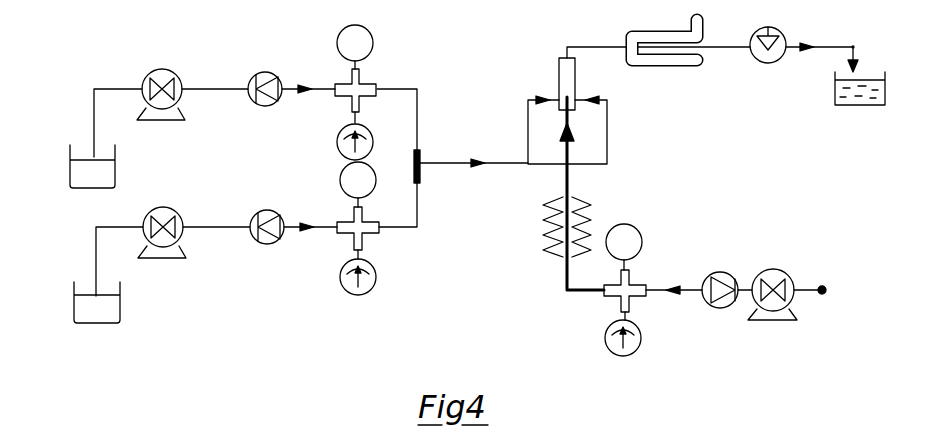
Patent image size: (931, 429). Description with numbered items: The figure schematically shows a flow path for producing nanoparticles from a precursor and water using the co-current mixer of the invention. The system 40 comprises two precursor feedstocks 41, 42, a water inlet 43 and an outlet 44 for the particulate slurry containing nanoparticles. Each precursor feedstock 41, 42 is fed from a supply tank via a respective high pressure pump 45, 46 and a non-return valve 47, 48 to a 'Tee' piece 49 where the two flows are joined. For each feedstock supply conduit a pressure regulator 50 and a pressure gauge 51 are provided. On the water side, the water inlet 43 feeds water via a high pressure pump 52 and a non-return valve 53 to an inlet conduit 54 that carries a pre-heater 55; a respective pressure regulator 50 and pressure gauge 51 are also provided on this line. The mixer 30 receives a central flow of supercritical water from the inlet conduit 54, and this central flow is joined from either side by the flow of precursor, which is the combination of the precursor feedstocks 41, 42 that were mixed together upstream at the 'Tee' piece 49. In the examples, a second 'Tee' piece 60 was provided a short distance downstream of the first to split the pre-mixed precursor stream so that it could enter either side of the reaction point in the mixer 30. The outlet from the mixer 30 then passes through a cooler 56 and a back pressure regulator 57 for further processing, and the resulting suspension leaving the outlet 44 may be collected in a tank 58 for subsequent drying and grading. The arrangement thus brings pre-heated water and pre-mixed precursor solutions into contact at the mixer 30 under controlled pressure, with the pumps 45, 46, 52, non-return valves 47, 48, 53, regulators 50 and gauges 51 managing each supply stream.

The mixer 30 is at (552, 63).
The system 40 is at (490, 58).
The precursor feedstock 41 is at (76, 176).
The precursor feedstock 42 is at (97, 316).
The water inlet 43 is at (840, 265).
The outlet 44 is at (846, 47).
The high pressure pump 45 is at (164, 69).
The high pressure pump 46 is at (179, 207).
The non-return valve 47 is at (277, 50).
The non-return valve 48 is at (273, 211).
The 'Tee' piece 49 is at (426, 163).
The pressure regulator 50 is at (402, 20).
The pressure gauge 51 is at (338, 139).
The high pressure pump 52 is at (770, 270).
The non-return valve 53 is at (720, 308).
The inlet conduit 54 is at (568, 182).
The pre-heater 55 is at (548, 245).
The cooler 56 is at (672, 71).
The back pressure regulator 57 is at (770, 63).
The tank 58 is at (845, 106).
The second 'Tee' piece 60 is at (520, 171).